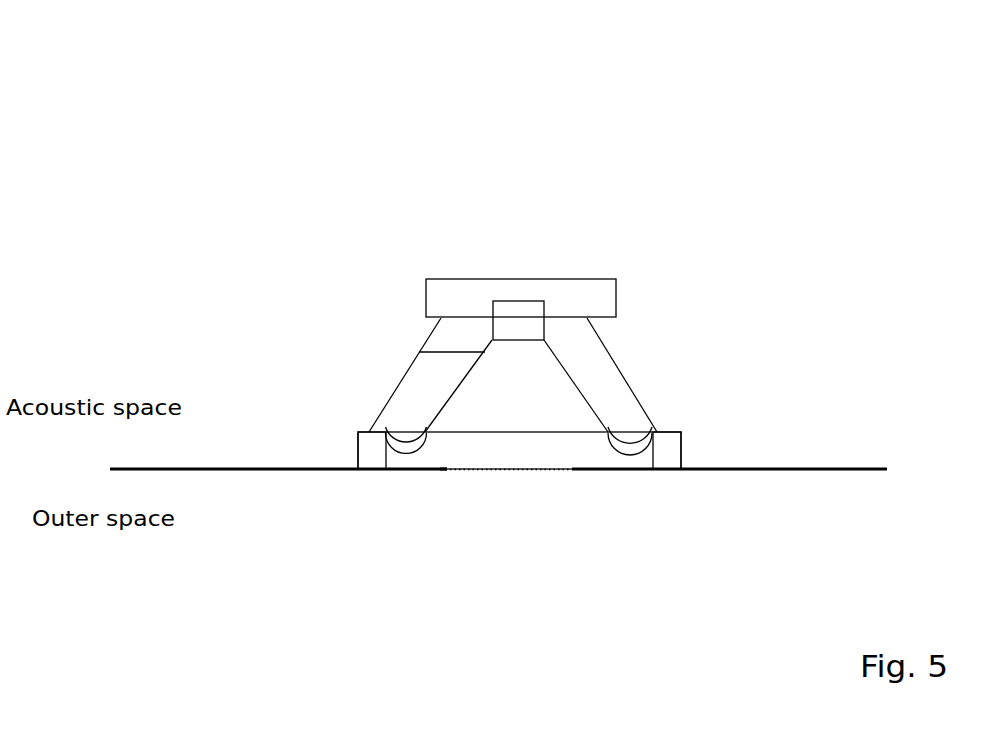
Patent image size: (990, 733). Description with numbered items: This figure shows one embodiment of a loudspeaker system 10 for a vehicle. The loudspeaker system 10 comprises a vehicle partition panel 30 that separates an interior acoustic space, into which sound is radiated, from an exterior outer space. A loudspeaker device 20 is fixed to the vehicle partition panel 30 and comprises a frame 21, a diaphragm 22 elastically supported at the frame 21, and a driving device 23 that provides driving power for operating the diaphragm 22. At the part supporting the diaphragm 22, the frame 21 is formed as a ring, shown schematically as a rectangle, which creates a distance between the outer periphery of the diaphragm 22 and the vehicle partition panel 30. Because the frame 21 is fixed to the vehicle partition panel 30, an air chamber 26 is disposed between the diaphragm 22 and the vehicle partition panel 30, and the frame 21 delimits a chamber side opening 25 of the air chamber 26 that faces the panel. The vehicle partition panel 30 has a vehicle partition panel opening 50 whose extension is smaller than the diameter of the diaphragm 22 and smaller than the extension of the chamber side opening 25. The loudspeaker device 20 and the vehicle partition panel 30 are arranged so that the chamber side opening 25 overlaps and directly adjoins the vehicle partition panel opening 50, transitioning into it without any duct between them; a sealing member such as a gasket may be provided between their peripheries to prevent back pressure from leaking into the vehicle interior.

The loudspeaker system 10 is at (750, 127).
The loudspeaker device 20 is at (517, 212).
The frame 21 is at (413, 365).
The diaphragm 22 is at (447, 400).
The driving device 23 is at (557, 277).
The chamber side opening 25 is at (555, 458).
The air chamber 26 is at (519, 448).
The vehicle partition panel 30 is at (498, 496).
The vehicle partition panel opening 50 is at (448, 471).